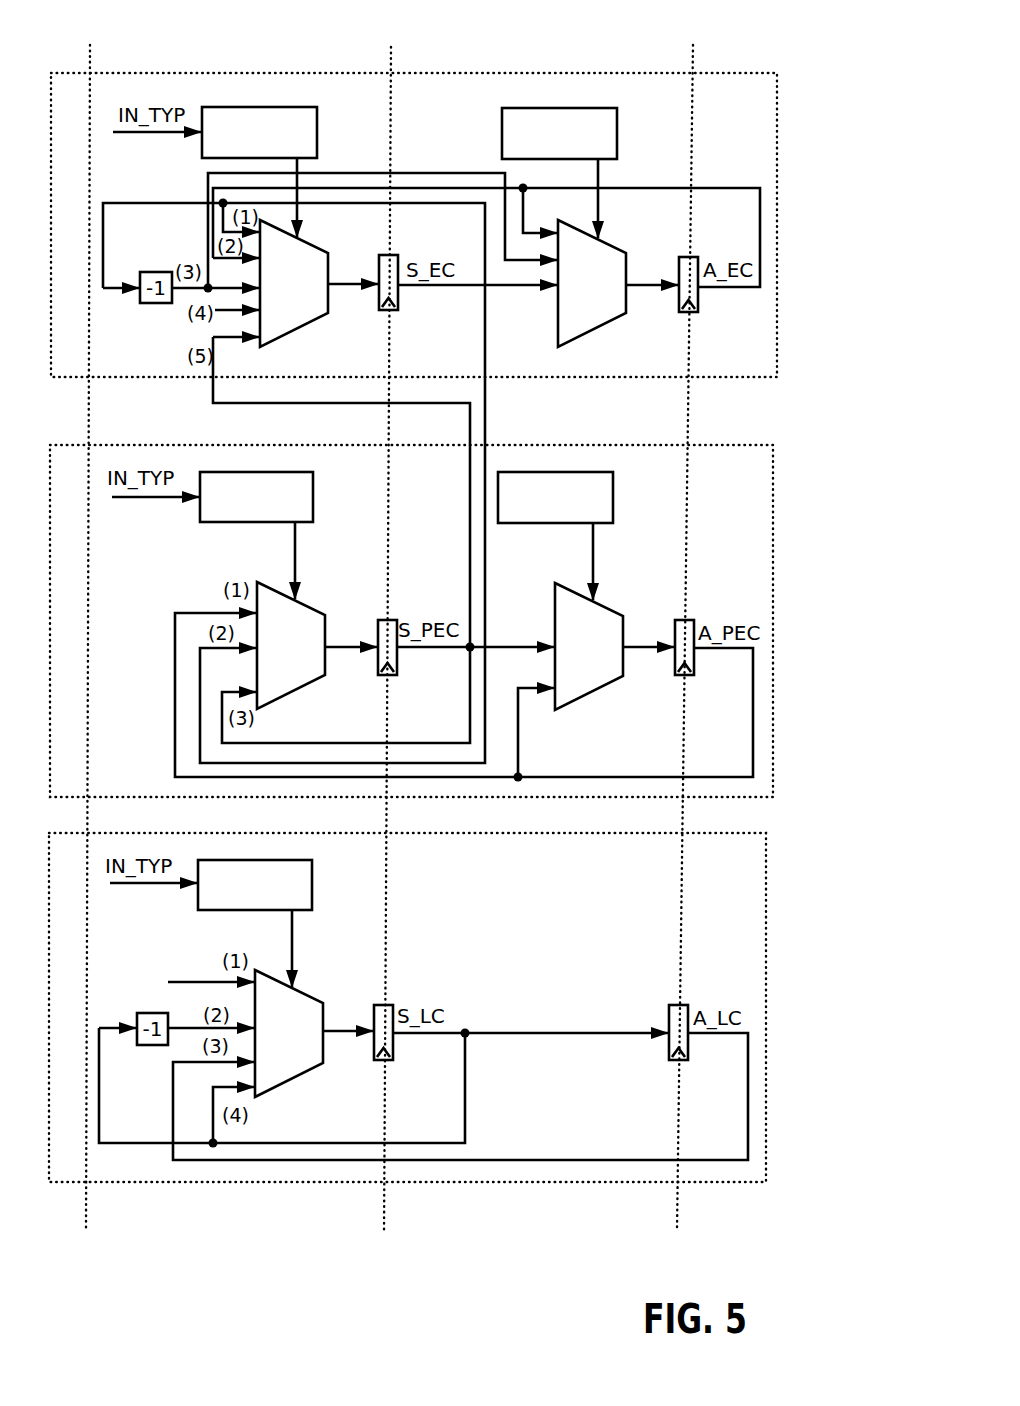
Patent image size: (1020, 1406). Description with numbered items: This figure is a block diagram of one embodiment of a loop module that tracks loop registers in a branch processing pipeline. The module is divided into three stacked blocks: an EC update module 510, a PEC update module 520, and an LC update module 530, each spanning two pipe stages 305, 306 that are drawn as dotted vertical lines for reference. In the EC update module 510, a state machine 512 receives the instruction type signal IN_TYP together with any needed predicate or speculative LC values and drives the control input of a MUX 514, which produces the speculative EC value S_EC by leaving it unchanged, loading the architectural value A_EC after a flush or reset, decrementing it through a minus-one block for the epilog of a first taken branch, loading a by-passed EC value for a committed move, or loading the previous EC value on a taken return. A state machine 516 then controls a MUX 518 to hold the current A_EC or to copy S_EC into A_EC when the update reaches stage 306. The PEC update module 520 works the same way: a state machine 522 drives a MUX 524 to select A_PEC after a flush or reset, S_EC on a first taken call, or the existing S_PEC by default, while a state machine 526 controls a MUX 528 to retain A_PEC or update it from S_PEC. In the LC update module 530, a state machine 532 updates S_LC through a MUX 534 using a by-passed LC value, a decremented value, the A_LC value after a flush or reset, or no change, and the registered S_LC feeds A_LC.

The pipe stage 305 is at (238, 621).
The pipe stage 306 is at (607, 620).
The EC update module 510 is at (779, 285).
The state machine 512 is at (259, 132).
The MUX 514 is at (294, 283).
The state machine 516 is at (559, 133).
The MUX 518 is at (592, 283).
The PEC update module 520 is at (773, 639).
The state machine 522 is at (256, 497).
The MUX 524 is at (291, 645).
The state machine 526 is at (555, 497).
The MUX 528 is at (589, 646).
The LC update module 530 is at (767, 1016).
The state machine 532 is at (255, 885).
The MUX 534 is at (289, 1033).